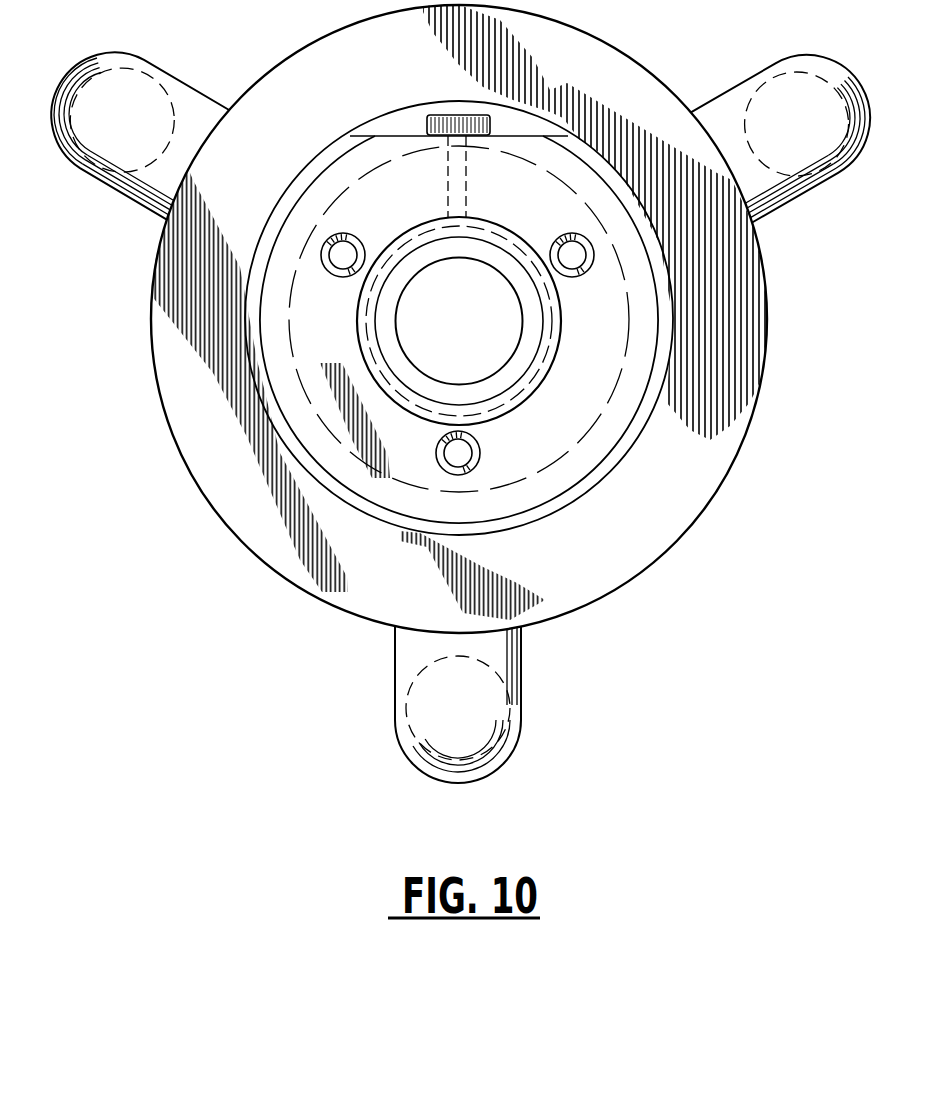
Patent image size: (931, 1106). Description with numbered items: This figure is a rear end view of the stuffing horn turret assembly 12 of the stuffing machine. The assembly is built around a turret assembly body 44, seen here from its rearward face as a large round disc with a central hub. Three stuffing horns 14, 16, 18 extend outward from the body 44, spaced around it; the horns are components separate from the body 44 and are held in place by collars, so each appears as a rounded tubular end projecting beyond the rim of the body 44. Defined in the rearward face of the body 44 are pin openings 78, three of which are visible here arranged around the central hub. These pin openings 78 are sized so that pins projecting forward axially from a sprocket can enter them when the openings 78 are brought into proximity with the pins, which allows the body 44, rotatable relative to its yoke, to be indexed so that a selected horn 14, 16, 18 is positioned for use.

The stuffing horn turret assembly 12 is at (650, 570).
The stuffing horn 14 is at (775, 62).
The stuffing horn 16 is at (147, 62).
The stuffing horn 18 is at (397, 740).
The turret assembly body 44 is at (205, 437).
The pin openings 78 is at (348, 258).